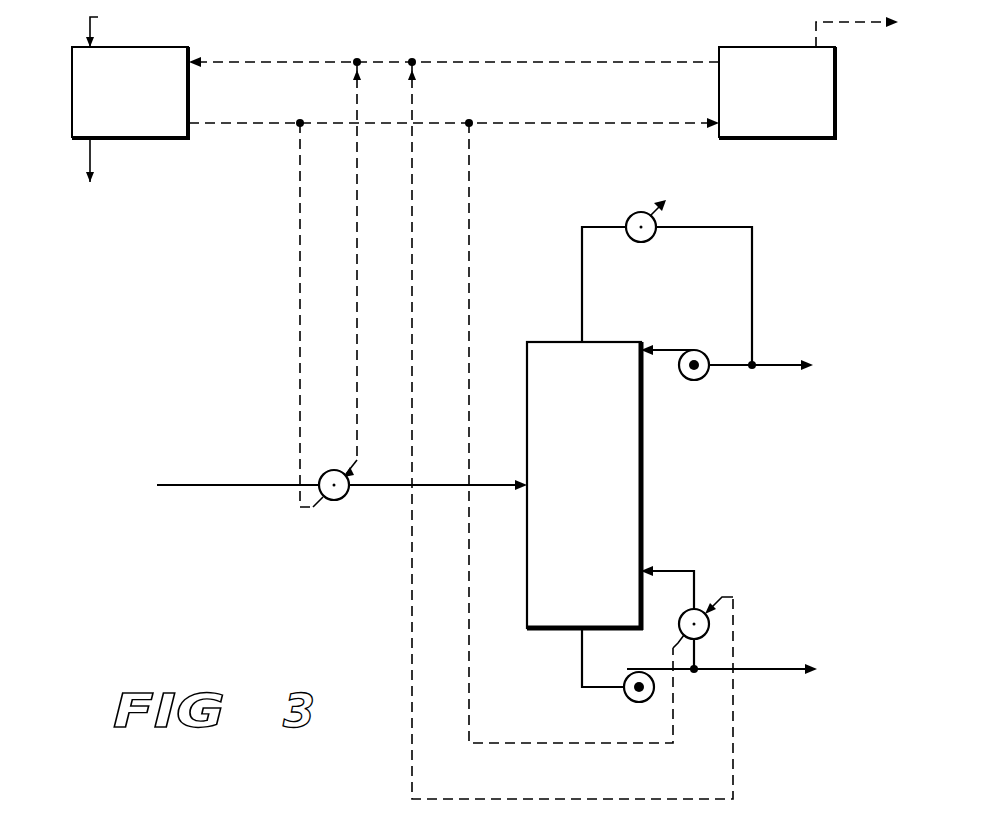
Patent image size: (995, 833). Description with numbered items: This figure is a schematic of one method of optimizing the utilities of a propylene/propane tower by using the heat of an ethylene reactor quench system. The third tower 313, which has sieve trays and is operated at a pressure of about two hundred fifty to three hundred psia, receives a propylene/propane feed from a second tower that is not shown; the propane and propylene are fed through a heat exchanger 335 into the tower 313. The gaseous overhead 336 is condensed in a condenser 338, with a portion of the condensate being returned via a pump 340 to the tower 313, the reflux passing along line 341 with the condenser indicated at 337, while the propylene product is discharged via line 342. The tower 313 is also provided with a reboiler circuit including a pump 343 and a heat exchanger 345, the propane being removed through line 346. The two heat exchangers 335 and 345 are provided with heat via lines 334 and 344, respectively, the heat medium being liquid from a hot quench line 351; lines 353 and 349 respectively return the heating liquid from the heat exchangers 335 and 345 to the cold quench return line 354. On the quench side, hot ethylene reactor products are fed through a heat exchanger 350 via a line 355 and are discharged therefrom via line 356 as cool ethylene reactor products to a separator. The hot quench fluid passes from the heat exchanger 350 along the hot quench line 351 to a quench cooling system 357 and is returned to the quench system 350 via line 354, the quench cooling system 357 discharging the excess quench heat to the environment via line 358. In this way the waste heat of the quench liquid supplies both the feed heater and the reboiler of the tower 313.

The third tower 313 is at (597, 493).
The line 334 is at (301, 378).
The heat exchanger 335 is at (336, 502).
The gaseous overhead 336 is at (582, 312).
The overhead condenser 337 is at (628, 240).
The condenser 338 is at (640, 212).
The pump 340 is at (697, 383).
The reflux line 341 is at (660, 348).
The line 342 is at (778, 364).
The pump 343 is at (632, 700).
The line 344 is at (413, 648).
The heat exchanger 345 is at (686, 611).
The line 346 is at (760, 668).
The line 349 is at (470, 728).
The heat exchanger 350 is at (148, 138).
The hot quench line 351 is at (500, 124).
The line 353 is at (358, 311).
The cold quench return line 354 is at (457, 64).
The line 355 is at (88, 33).
The line 356 is at (90, 150).
The quench cooling system 357 is at (786, 138).
The line 358 is at (840, 24).